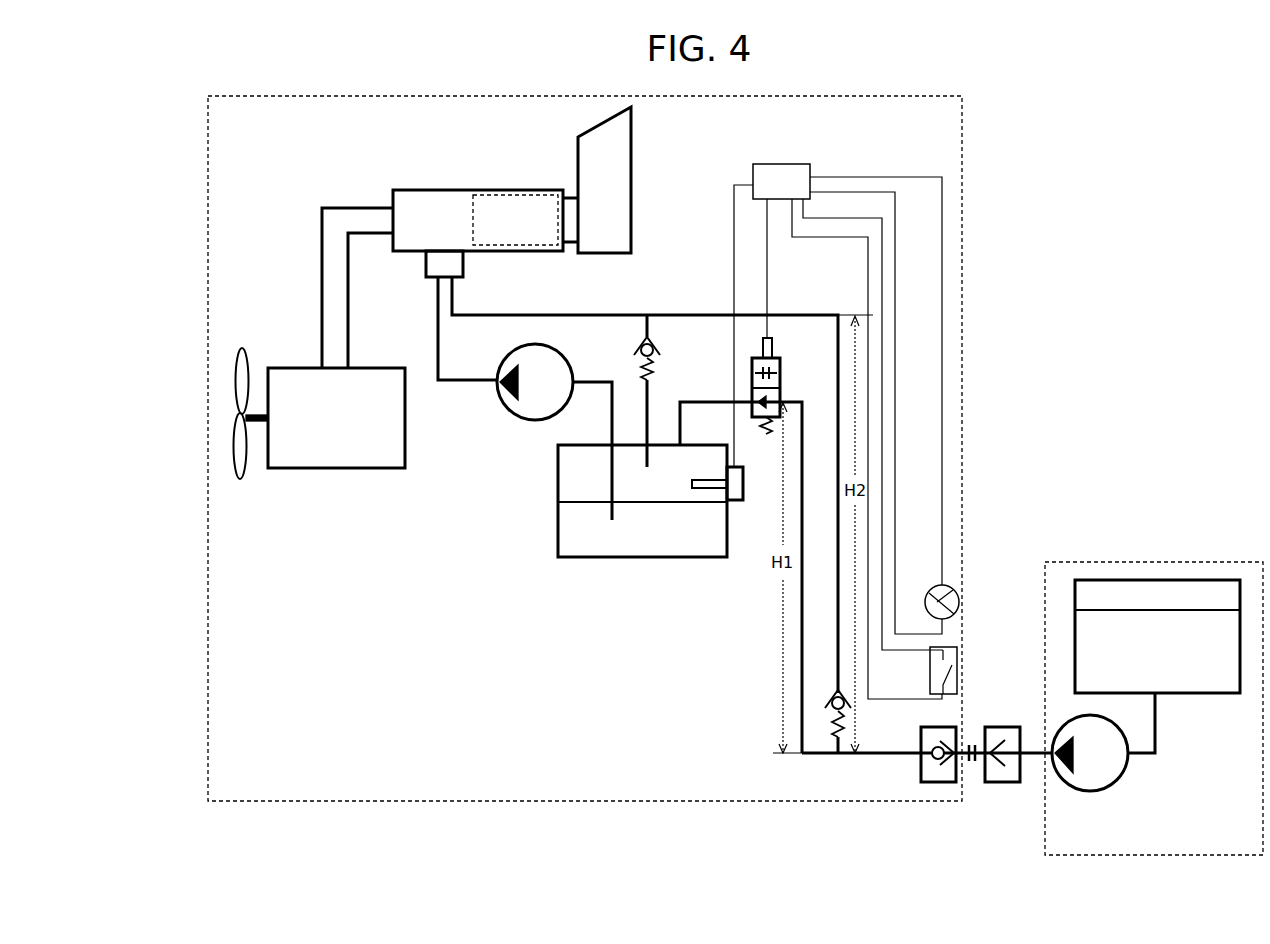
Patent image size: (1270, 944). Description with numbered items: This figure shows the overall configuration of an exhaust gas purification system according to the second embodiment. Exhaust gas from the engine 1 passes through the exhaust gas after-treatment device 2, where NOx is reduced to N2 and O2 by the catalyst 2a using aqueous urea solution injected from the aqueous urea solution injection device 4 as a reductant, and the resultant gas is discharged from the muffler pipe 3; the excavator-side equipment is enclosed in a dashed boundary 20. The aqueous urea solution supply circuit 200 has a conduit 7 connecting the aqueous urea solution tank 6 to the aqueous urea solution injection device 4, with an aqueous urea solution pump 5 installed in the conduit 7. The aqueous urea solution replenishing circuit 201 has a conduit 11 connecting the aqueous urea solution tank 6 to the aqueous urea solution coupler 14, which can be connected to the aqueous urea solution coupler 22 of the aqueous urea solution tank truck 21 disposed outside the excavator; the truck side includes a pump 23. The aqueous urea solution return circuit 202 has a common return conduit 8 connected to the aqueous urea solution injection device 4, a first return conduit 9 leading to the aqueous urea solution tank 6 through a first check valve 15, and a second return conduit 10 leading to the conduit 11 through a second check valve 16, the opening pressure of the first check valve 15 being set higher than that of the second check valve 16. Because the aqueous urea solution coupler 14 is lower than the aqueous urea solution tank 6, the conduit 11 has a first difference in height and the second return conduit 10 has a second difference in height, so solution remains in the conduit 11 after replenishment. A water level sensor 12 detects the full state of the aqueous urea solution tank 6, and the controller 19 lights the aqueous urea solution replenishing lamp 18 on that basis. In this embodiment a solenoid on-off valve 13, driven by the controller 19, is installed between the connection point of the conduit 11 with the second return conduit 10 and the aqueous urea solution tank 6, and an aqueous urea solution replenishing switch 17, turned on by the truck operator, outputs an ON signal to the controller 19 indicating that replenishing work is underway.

The engine 1 is at (360, 468).
The exhaust gas after-treatment device 2 is at (527, 190).
The catalyst 2a is at (480, 192).
The muffler pipe 3 is at (631, 165).
The aqueous urea solution injection device 4 is at (463, 268).
The aqueous urea solution pump 5 is at (533, 420).
The aqueous urea solution tank 6 is at (615, 557).
The conduit 7 is at (438, 365).
The common return conduit 8 is at (530, 315).
The first return conduit 9 is at (650, 400).
The second return conduit 10 is at (707, 315).
The conduit 11 is at (802, 660).
The water level sensor 12 is at (703, 490).
The solenoid on-off valve 13 is at (752, 378).
The aqueous urea solution coupler 14 is at (945, 782).
The first check valve 15 is at (640, 340).
The second check valve 16 is at (825, 708).
The aqueous urea solution replenishing switch 17 is at (957, 668).
The aqueous urea solution replenishing lamp 18 is at (960, 600).
The controller 19 is at (810, 166).
The power generation unit 20 is at (962, 133).
The aqueous urea solution tank truck 21 is at (1155, 562).
The aqueous urea solution coupler 22 is at (1003, 782).
The external oil pump 23 is at (1112, 785).
The aqueous urea solution supply circuit 200 is at (463, 388).
The aqueous urea solution replenishing circuit 201 is at (770, 672).
The aqueous urea solution return circuit 202 is at (777, 308).